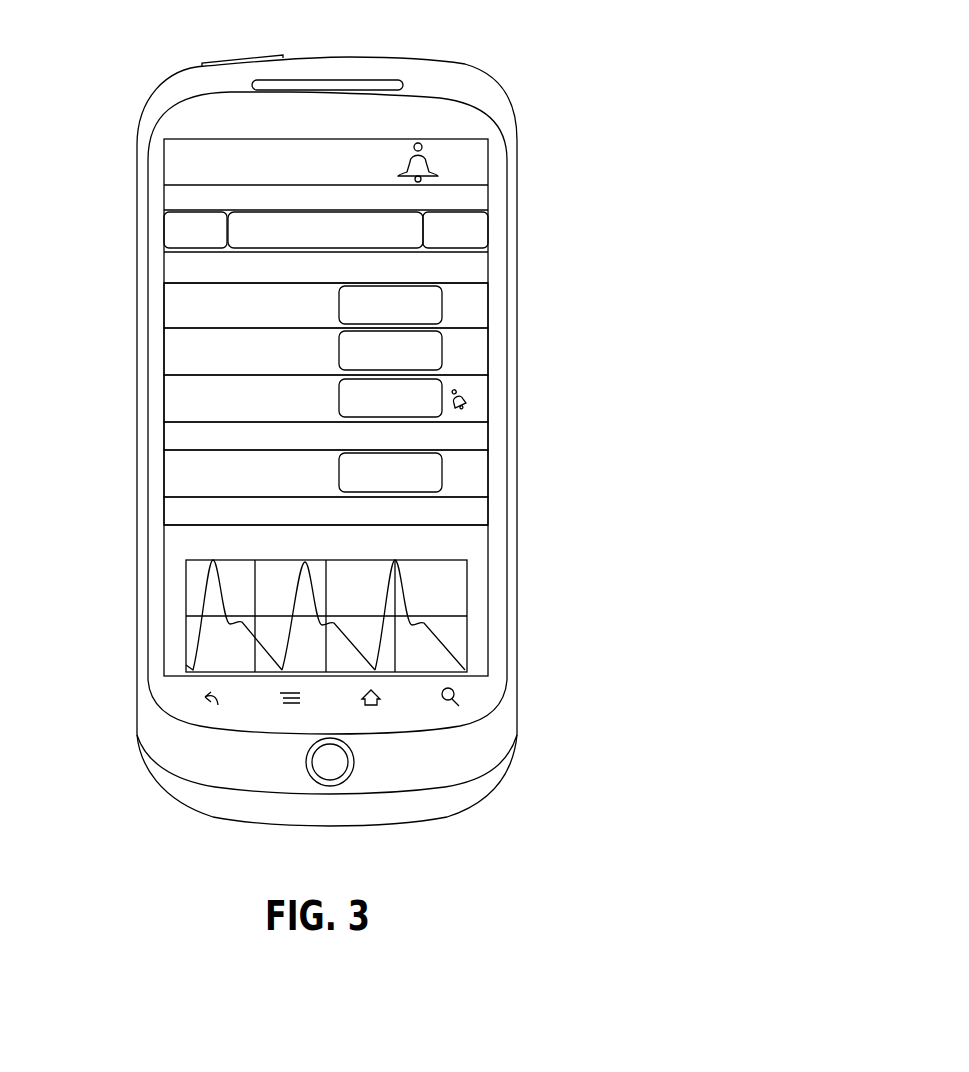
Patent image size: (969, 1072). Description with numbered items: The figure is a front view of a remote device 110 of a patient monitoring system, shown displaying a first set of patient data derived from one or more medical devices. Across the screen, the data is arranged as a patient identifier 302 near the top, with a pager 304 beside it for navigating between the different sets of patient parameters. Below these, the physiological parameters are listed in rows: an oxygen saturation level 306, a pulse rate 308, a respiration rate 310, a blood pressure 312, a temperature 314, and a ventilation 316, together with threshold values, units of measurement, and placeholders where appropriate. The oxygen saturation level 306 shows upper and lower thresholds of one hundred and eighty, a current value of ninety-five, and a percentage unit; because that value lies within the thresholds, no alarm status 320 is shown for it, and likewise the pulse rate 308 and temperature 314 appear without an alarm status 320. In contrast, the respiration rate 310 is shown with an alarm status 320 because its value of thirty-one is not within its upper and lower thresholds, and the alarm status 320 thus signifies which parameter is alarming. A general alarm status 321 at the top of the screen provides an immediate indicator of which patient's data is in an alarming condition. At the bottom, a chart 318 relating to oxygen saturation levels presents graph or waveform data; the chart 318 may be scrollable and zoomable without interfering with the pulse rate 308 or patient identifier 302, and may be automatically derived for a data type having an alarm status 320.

The remote device 110 is at (530, 67).
The patient identifier 302 is at (411, 243).
The pager 304 is at (164, 232).
The oxygen saturation level 306 is at (164, 305).
The pulse rate 308 is at (164, 353).
The respiration rate 310 is at (164, 405).
The blood pressure 312 is at (164, 437).
The temperature 314 is at (164, 474).
The ventilation 316 is at (164, 512).
The chart 318 is at (467, 608).
The alarm status 320 is at (470, 400).
The general alarm status 321 is at (421, 143).